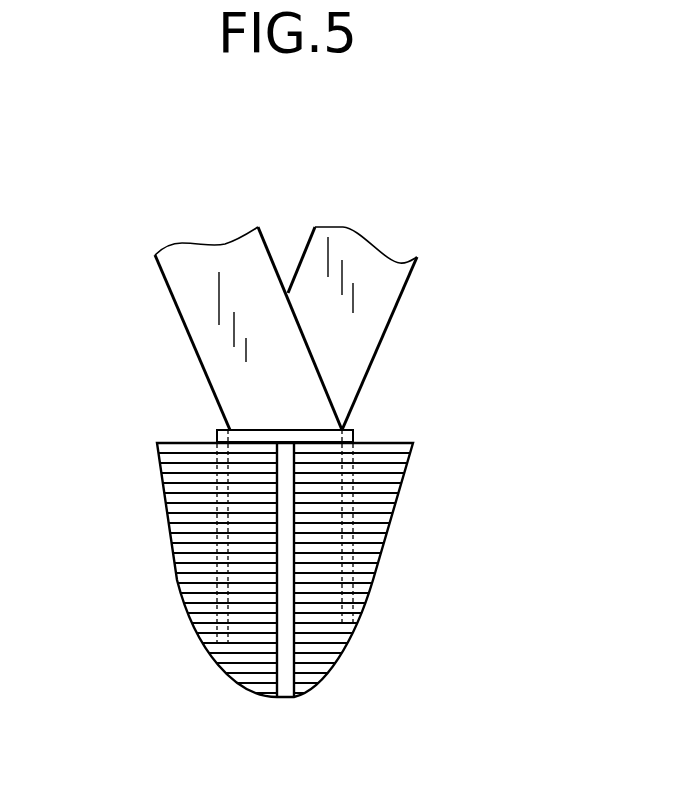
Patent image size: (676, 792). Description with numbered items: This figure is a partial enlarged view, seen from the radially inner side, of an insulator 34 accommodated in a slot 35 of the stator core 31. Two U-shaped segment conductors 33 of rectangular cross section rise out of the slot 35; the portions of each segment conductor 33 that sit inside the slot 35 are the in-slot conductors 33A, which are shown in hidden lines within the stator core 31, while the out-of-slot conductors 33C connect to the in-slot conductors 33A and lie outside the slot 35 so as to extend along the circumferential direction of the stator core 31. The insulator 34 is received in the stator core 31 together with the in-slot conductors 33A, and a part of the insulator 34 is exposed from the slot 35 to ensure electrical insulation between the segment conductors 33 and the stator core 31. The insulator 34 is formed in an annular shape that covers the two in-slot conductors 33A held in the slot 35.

The stator core 31 is at (173, 507).
The segment conductor 33 is at (211, 229).
The in-slot conductor 33A is at (367, 533).
The out-of-slot conductor 33C is at (252, 265).
The insulator 34 is at (328, 373).
The slot 35 is at (285, 599).